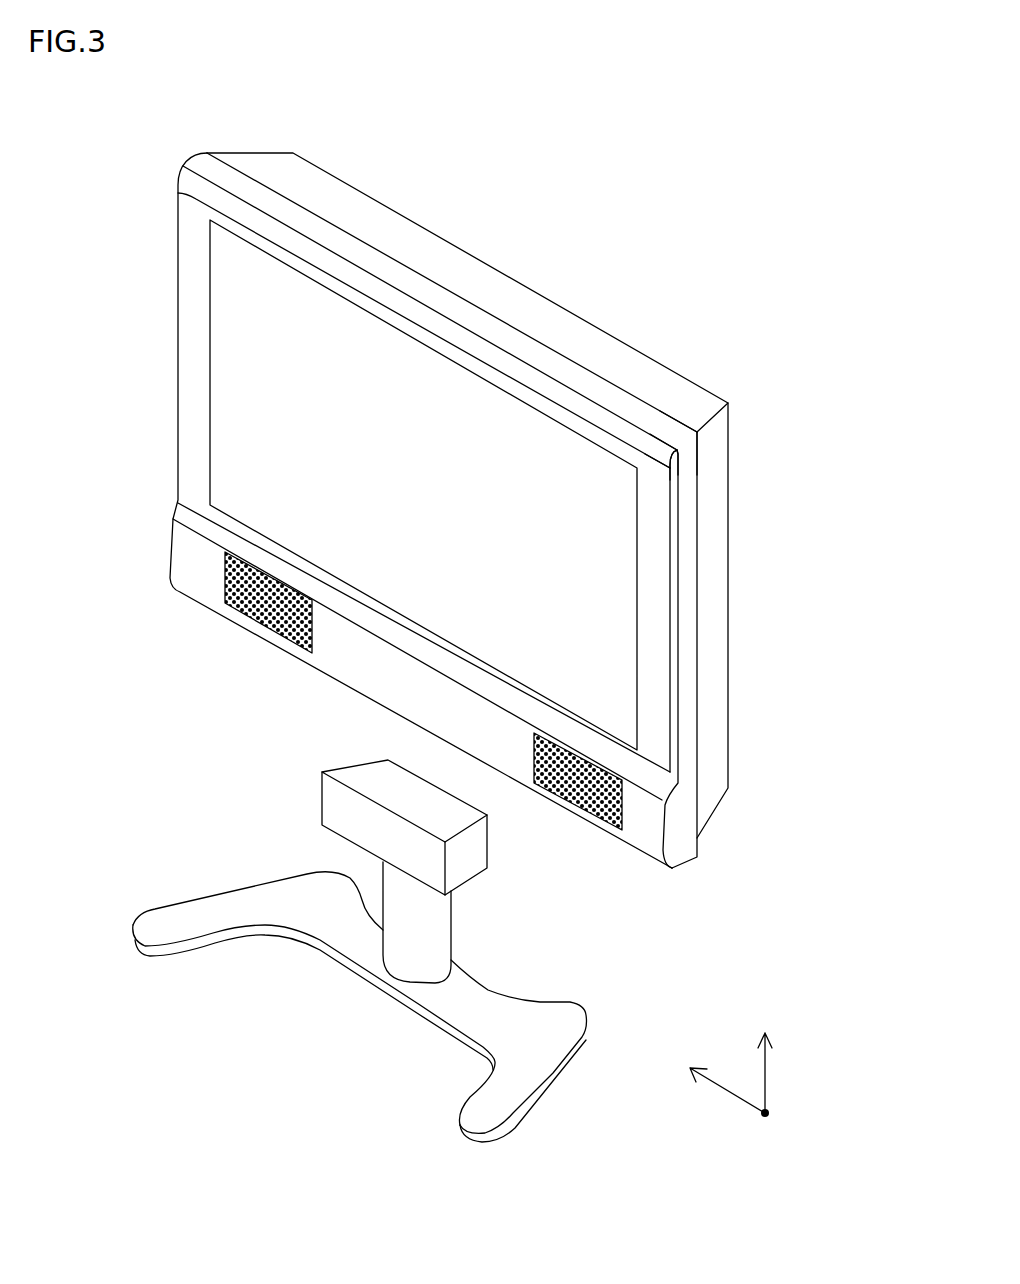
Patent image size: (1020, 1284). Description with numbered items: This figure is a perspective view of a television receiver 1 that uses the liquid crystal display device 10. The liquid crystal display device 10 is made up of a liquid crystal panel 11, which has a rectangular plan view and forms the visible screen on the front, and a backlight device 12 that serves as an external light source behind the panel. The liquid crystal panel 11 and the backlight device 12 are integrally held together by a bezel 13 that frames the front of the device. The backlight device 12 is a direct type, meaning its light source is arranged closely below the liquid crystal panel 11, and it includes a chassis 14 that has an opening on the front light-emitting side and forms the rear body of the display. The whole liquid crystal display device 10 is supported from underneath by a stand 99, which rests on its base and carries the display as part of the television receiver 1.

The television receiver 1 is at (613, 233).
The liquid crystal display device 10 is at (511, 258).
The liquid crystal panel 11 is at (258, 428).
The backlight device 12 is at (733, 545).
The bezel 13 is at (208, 167).
The chassis 14 is at (692, 402).
The stand 99 is at (488, 1012).